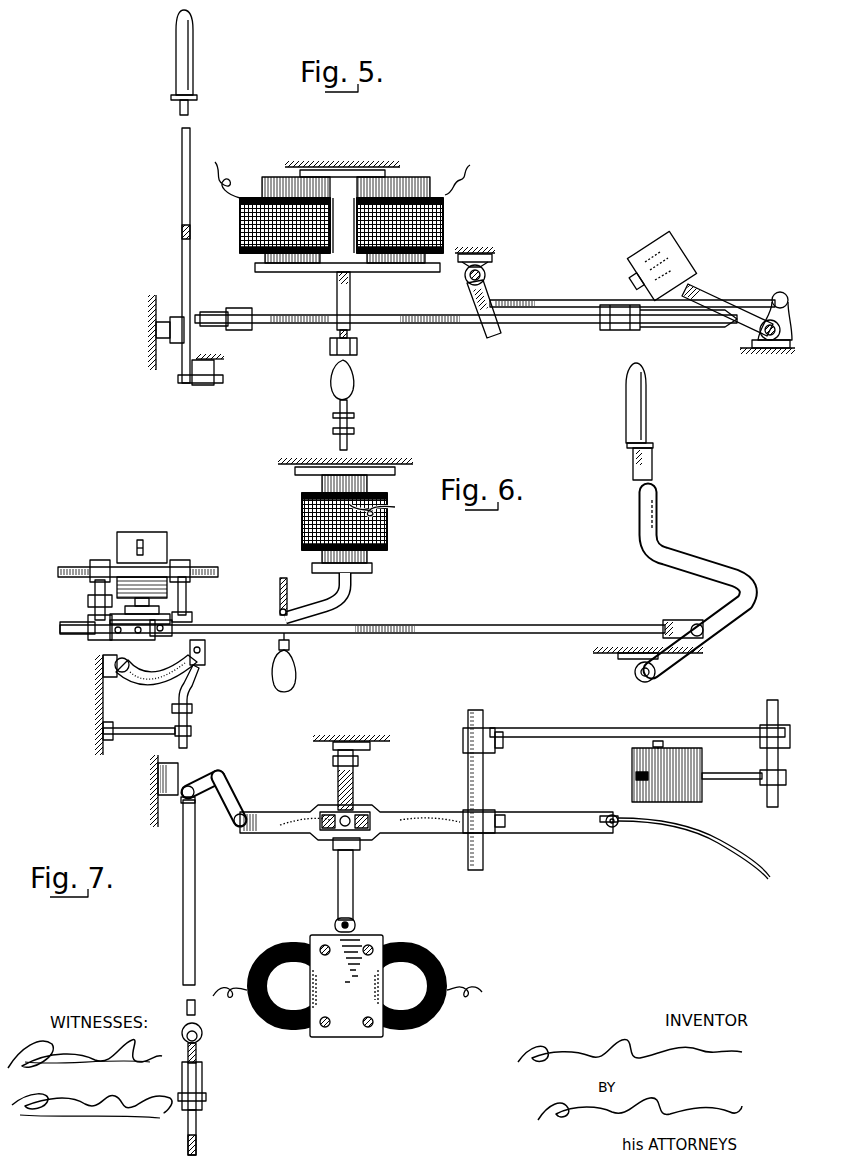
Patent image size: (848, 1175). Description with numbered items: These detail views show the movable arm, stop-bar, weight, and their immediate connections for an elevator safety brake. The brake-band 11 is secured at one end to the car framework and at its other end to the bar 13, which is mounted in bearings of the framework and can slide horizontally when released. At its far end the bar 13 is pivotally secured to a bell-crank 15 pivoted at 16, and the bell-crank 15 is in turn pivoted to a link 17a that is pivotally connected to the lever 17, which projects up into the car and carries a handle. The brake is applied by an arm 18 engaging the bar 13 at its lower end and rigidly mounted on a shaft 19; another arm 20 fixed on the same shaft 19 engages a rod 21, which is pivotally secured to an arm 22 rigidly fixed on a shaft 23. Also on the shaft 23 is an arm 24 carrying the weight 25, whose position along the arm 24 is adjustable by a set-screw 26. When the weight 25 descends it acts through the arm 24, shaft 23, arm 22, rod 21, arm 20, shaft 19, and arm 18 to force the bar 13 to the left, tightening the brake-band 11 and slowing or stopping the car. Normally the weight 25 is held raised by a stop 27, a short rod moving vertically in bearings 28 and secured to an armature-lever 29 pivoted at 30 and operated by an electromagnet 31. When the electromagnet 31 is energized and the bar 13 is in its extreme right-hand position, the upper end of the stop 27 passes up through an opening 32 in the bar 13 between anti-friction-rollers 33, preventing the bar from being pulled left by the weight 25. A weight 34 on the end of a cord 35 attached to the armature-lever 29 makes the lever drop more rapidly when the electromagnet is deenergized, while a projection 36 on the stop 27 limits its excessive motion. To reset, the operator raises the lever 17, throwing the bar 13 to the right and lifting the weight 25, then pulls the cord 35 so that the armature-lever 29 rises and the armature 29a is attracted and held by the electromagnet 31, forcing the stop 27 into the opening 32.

In FIG. 7, the brake-band 11 is at (722, 843).
In FIG. 5, the bar 13 is at (437, 325).
In FIG. 7, the bar 13 is at (560, 835).
In FIG. 7, the bell-crank 15 is at (243, 800).
In FIG. 7, the pivot 16 is at (228, 772).
In FIG. 5, the lever 17 is at (182, 168).
In FIG. 6, the lever 17 is at (650, 407).
In FIG. 6, the link 17a is at (473, 625).
In FIG. 7, the link 17a is at (195, 888).
In FIG. 5, the arm 18 is at (470, 294).
In FIG. 6, the arm 18 is at (187, 595).
In FIG. 7, the arm 18 is at (505, 812).
In FIG. 5, the shaft 19 is at (488, 271).
In FIG. 6, the shaft 19 is at (205, 566).
In FIG. 7, the shaft 19 is at (468, 783).
In FIG. 6, the arm 20 is at (95, 592).
In FIG. 7, the arm 20 is at (468, 746).
In FIG. 5, the rod 21 is at (552, 300).
In FIG. 7, the rod 21 is at (550, 728).
In FIG. 5, the arm 22 is at (776, 292).
In FIG. 7, the arm 22 is at (781, 732).
In FIG. 5, the shaft 23 is at (758, 338).
In FIG. 7, the shaft 23 is at (764, 763).
In FIG. 5, the arm 24 is at (714, 290).
In FIG. 6, the arm 24 is at (140, 540).
In FIG. 7, the arm 24 is at (748, 780).
In FIG. 5, the weight 25 is at (668, 246).
In FIG. 6, the weight 25 is at (160, 545).
In FIG. 7, the weight 25 is at (694, 790).
In FIG. 7, the set-screw 26 is at (652, 745).
In FIG. 6, the stop 27 is at (189, 688).
In FIG. 7, the stop 27 is at (352, 814).
In FIG. 6, the bearings 28 is at (205, 660).
In FIG. 5, the armature-lever 29 is at (350, 294).
In FIG. 6, the armature-lever 29 is at (150, 692).
In FIG. 7, the armature-lever 29 is at (353, 889).
In FIG. 6, the armature 29a is at (365, 558).
In FIG. 6, the pivot 30 is at (128, 663).
In FIG. 5, the electromagnet 31 is at (443, 234).
In FIG. 6, the electromagnet 31 is at (387, 538).
In FIG. 7, the opening 32 is at (342, 815).
In FIG. 7, the anti-friction-rollers 33 is at (323, 816).
In FIG. 5, the weight 34 is at (355, 388).
In FIG. 6, the weight 34 is at (297, 674).
In FIG. 6, the cord 35 is at (280, 587).
In FIG. 6, the projection 36 is at (192, 709).